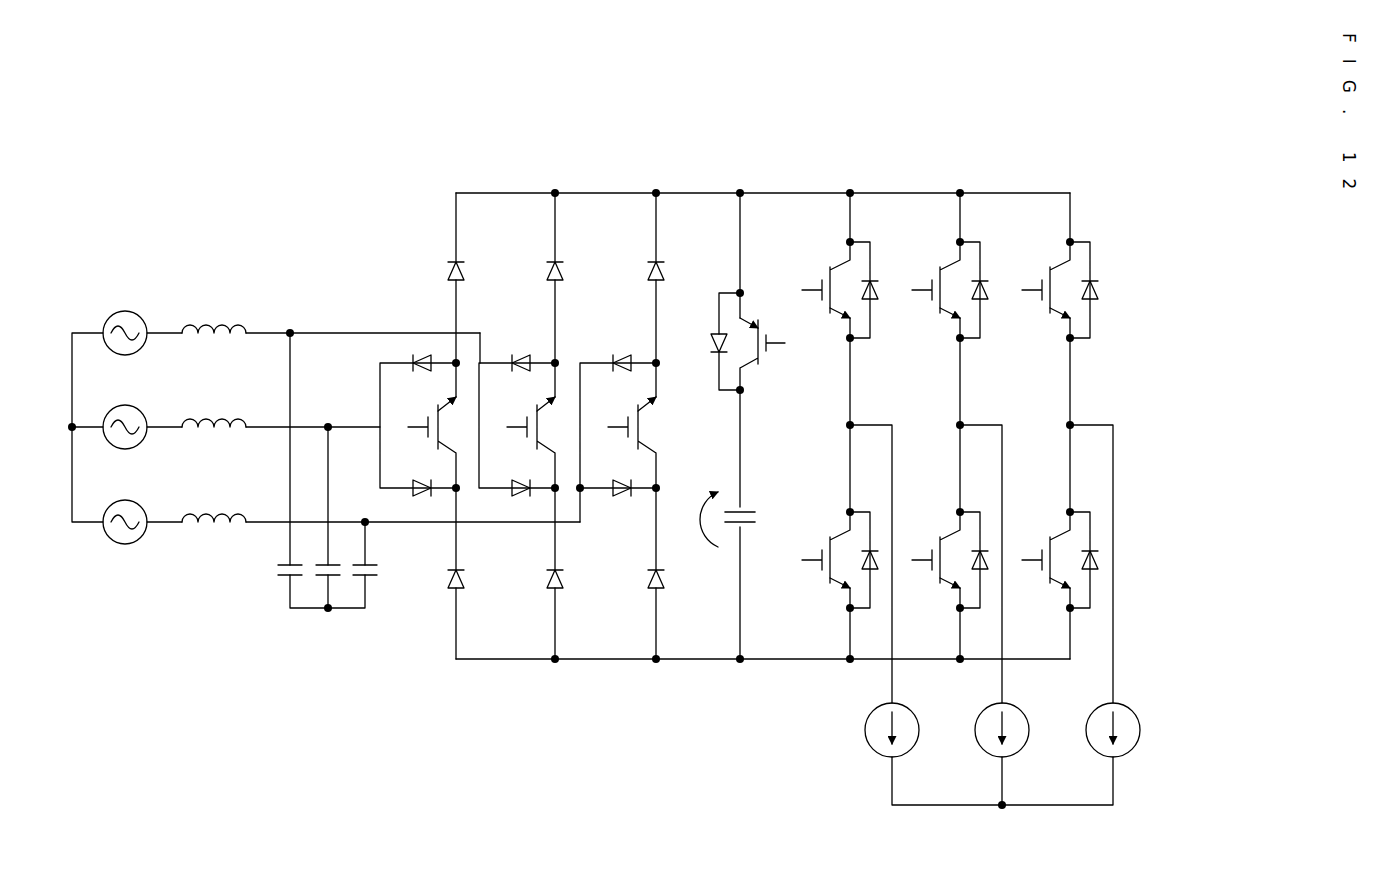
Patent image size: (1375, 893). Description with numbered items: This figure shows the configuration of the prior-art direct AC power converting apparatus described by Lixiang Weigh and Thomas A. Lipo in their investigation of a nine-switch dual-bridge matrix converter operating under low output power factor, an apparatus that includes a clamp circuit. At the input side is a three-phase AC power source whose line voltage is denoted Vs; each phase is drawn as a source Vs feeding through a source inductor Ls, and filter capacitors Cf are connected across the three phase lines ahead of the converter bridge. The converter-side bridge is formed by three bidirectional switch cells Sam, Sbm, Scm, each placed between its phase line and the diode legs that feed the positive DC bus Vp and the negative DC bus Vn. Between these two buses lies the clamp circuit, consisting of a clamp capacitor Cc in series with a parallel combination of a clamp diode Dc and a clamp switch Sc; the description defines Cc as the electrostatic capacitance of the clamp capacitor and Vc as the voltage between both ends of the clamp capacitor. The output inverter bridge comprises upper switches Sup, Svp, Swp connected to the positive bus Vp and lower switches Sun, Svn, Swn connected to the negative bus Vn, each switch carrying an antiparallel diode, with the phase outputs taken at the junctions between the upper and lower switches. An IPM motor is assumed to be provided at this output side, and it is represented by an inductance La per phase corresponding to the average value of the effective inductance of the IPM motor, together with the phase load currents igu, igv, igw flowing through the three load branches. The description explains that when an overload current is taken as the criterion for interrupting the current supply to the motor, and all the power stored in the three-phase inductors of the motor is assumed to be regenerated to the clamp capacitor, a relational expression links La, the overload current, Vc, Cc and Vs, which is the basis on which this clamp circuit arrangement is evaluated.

The line voltage of three-phase AC power source Vs is at (125, 422).
The source inductor Ls is at (273, 408).
The filter capacitor Cf is at (309, 470).
The bidirectional switch (phase a) Sam is at (420, 425).
The bidirectional switch (phase b) Sbm is at (519, 414).
The bidirectional switch (phase c) Scm is at (618, 438).
The positive DC bus Vp is at (763, 180).
The negative DC bus Vn is at (763, 673).
The clamp diode Dc is at (712, 341).
The clamp switch Sc is at (765, 341).
The electrostatic capacitance of clamp capacitor Cc is at (748, 504).
The voltage between both ends of clamp capacitor Vc is at (701, 511).
The U-phase upper switch Sup is at (838, 290).
The V-phase upper switch Svp is at (945, 290).
The W-phase upper switch Swp is at (1056, 290).
The U-phase lower switch Sun is at (838, 560).
The V-phase lower switch Svn is at (949, 560).
The W-phase lower switch Swn is at (1056, 560).
The inductance per phase of IPM motor La is at (1006, 749).
The U-phase load current igu is at (855, 774).
The V-phase load current igv is at (966, 774).
The W-phase load current igw is at (1080, 774).